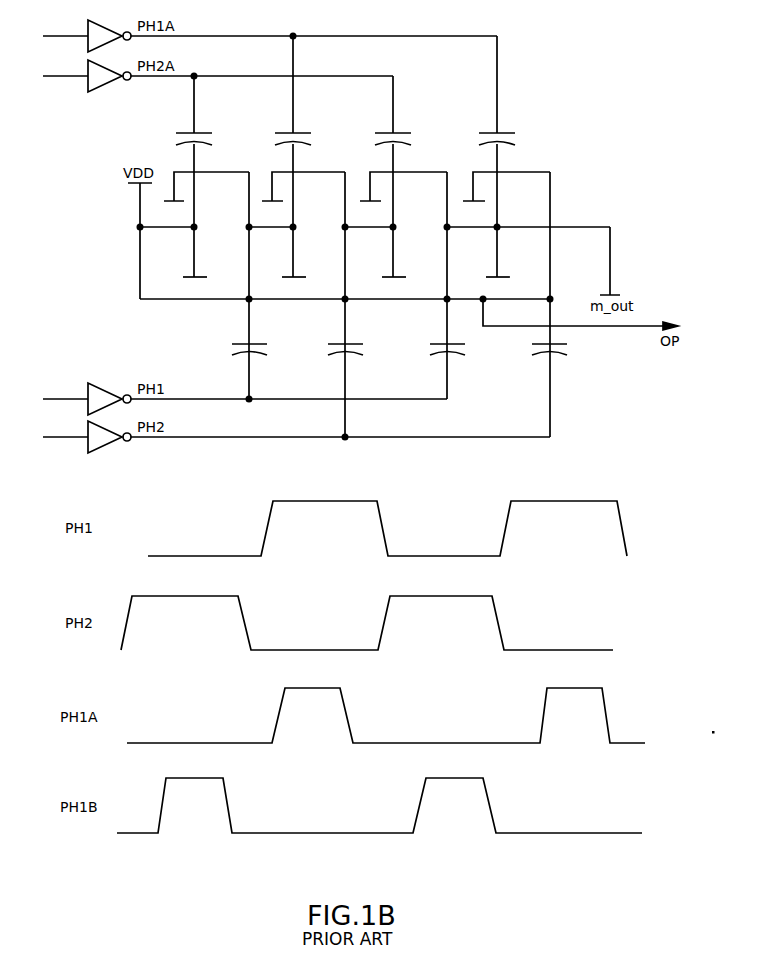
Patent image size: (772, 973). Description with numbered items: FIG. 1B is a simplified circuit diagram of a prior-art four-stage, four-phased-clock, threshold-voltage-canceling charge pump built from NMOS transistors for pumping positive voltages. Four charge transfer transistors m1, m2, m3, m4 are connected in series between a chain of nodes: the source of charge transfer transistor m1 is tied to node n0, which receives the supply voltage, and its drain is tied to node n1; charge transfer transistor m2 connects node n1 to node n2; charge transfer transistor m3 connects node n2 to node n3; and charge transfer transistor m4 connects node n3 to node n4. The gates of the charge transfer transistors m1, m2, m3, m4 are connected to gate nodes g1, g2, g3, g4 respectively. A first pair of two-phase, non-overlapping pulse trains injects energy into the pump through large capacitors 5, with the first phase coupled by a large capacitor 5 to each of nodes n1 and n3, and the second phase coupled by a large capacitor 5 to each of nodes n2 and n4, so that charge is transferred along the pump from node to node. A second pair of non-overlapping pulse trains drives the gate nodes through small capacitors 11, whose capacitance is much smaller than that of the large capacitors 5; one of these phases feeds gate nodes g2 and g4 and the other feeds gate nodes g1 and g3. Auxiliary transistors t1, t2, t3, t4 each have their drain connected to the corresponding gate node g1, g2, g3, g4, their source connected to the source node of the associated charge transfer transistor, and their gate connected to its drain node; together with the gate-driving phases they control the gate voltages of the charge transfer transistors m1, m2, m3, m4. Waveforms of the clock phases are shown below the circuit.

The small capacitor 11 is at (186, 131).
The large capacitor 5 is at (242, 353).
The auxiliary transistor t1 is at (206, 196).
The auxiliary transistor t2 is at (303, 196).
The auxiliary transistor t3 is at (403, 196).
The auxiliary transistor t4 is at (506, 196).
The gate node g1 is at (204, 229).
The gate node g2 is at (303, 229).
The gate node g3 is at (403, 229).
The gate node g4 is at (507, 237).
The charge transfer transistor m1 is at (195, 288).
The charge transfer transistor m2 is at (294, 288).
The charge transfer transistor m3 is at (395, 288).
The charge transfer transistor m4 is at (498, 288).
The node n0 is at (128, 227).
The node n1 is at (257, 308).
The node n2 is at (354, 308).
The node n3 is at (456, 308).
The node n4 is at (559, 303).